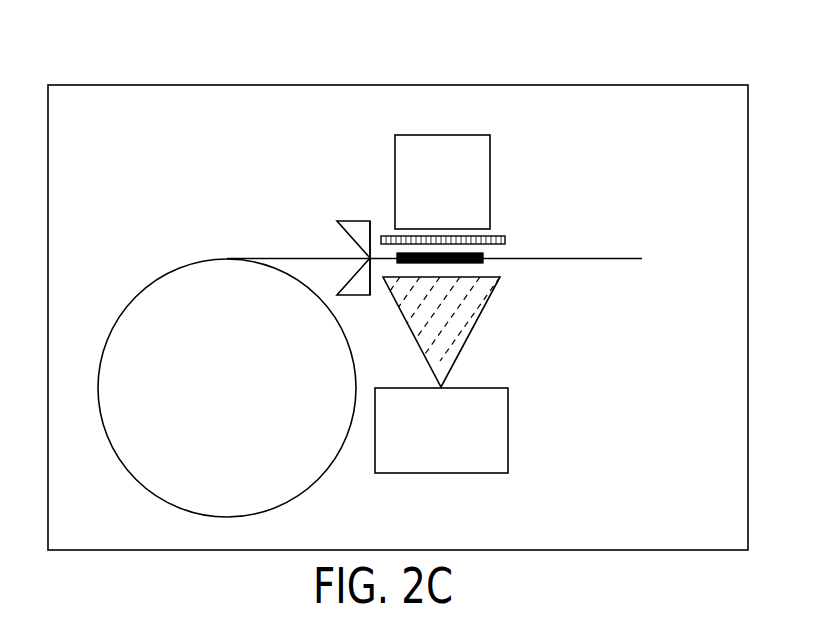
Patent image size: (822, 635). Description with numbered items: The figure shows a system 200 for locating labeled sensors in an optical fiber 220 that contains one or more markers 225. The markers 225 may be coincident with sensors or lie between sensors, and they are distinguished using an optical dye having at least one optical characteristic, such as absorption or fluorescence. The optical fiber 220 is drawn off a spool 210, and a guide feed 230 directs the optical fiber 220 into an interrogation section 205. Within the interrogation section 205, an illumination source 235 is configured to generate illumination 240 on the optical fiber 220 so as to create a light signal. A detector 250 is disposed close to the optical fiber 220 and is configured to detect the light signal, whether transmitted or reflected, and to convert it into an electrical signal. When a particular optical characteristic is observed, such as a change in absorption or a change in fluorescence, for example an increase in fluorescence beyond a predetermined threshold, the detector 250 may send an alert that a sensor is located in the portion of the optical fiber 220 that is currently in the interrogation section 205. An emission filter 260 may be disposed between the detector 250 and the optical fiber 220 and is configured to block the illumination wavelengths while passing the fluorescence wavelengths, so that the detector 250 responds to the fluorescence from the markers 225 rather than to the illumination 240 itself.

The tape application system 200 is at (145, 85).
The interrogation section 205 is at (432, 100).
The spool 210 is at (168, 288).
The optical fiber 220 is at (310, 258).
The markers 225 is at (483, 262).
The guide feed 230 is at (362, 228).
The illumination source 235 is at (510, 432).
The illumination 240 is at (397, 303).
The detector 250 is at (455, 135).
The emission filter 260 is at (503, 241).